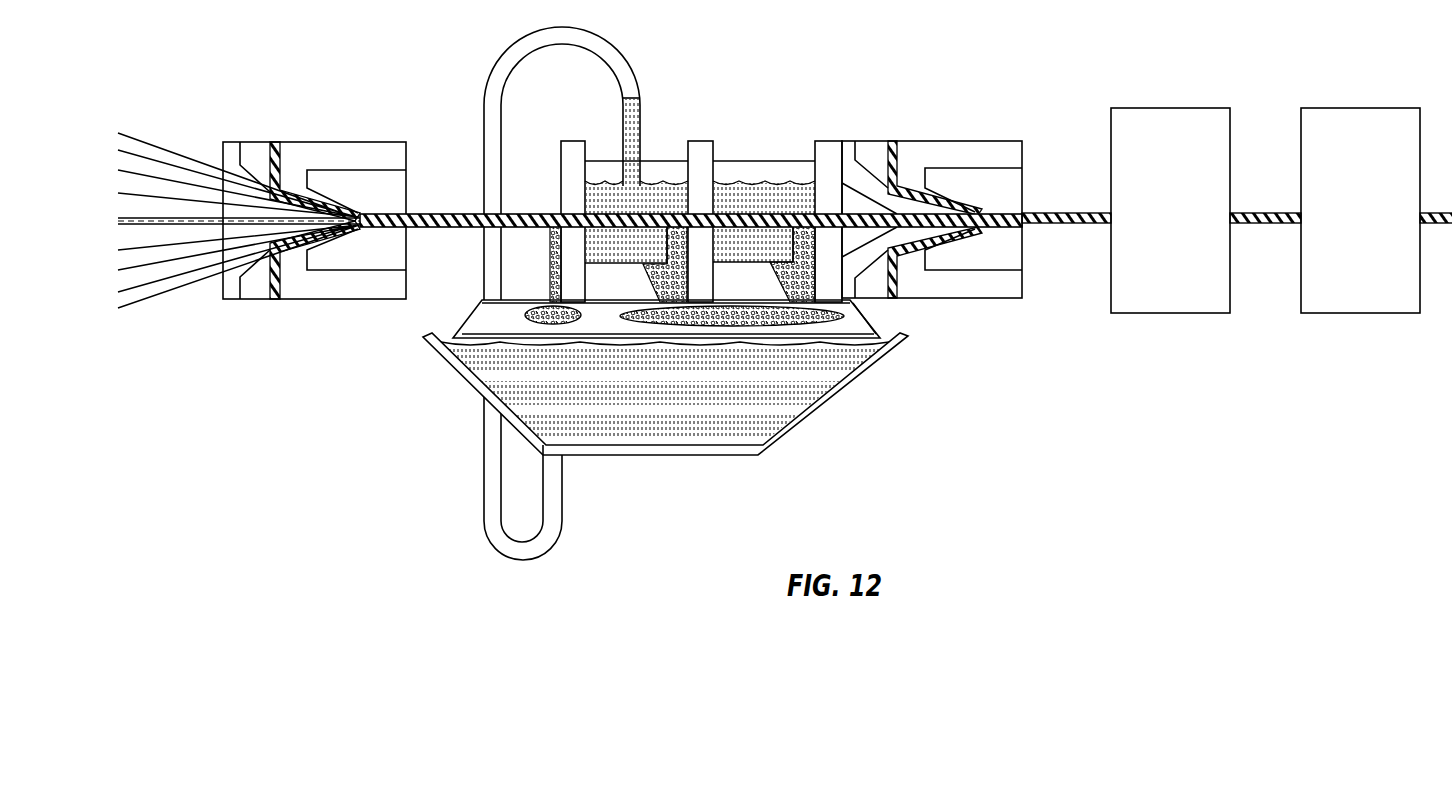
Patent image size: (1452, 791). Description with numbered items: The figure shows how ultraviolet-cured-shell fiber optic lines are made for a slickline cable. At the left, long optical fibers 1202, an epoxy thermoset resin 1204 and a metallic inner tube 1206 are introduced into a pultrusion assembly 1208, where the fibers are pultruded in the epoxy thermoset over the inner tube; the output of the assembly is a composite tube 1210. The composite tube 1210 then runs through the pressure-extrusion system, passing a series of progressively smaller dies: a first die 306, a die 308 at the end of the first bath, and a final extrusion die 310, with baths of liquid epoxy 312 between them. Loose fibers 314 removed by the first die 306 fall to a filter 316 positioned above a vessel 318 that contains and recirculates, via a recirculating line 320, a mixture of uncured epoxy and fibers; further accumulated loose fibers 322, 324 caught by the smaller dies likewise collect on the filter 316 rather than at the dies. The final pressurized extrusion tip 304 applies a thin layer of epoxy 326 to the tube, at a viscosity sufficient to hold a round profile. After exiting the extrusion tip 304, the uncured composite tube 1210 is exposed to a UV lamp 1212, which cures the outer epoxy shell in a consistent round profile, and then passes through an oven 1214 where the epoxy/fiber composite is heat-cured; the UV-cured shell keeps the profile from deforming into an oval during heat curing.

The long optical fiber 1202 is at (137, 170).
The epoxy thermoset resin 1204 is at (275, 142).
The metallic inner tube 1206 is at (165, 227).
The pultrusion assembly 1208 is at (317, 300).
The composite tube 1210 is at (467, 213).
The first die 306 is at (560, 218).
The die 308 is at (687, 207).
The final extrusion die 310 is at (815, 207).
The liquid epoxy bath 312 is at (605, 178).
The loose fibers 314 is at (550, 240).
The filter 316 is at (850, 320).
The vessel 318 is at (812, 415).
The recirculating line 320 is at (550, 533).
The accumulated loose fibers 322 is at (674, 292).
The accumulated loose fibers 324 is at (808, 318).
The epoxy layer 326 is at (892, 142).
The extrusion tip 304 is at (1005, 212).
The UV lamp 1212 is at (1170, 127).
The oven 1214 is at (1347, 118).